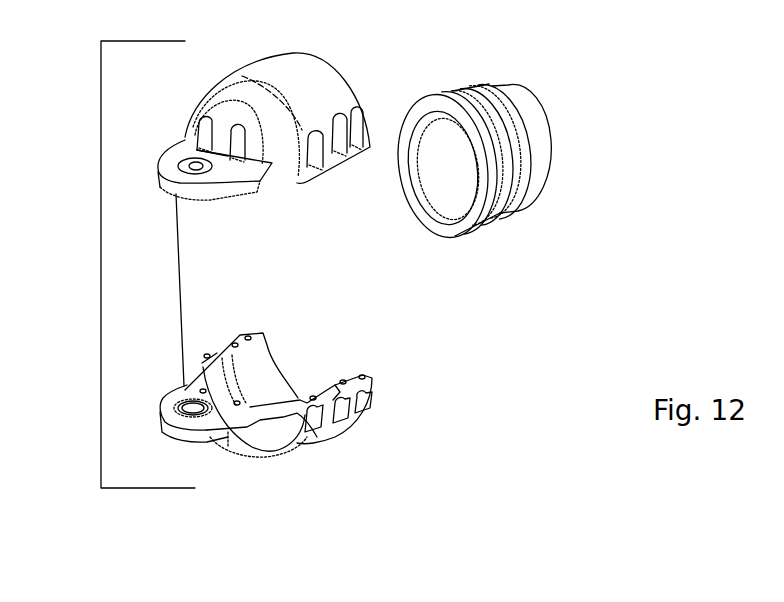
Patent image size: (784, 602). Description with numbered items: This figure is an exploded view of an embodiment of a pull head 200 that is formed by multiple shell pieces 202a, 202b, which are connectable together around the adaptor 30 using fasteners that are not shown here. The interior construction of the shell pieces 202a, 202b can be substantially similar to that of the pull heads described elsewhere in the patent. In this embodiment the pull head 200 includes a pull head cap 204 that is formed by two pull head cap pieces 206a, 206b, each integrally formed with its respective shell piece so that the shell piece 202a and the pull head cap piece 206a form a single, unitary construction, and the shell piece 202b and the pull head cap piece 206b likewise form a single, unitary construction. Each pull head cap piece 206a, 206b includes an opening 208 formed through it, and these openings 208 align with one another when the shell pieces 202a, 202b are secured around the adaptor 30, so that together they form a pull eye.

The pull head 200 is at (101, 265).
The shell piece 202a is at (327, 80).
The shell piece 202b is at (290, 447).
The pull head cap 204 is at (185, 281).
The pull head cap piece 206a is at (177, 153).
The pull head cap piece 206b is at (200, 427).
The opening 208 is at (196, 167).
The bushing 30 is at (547, 251).